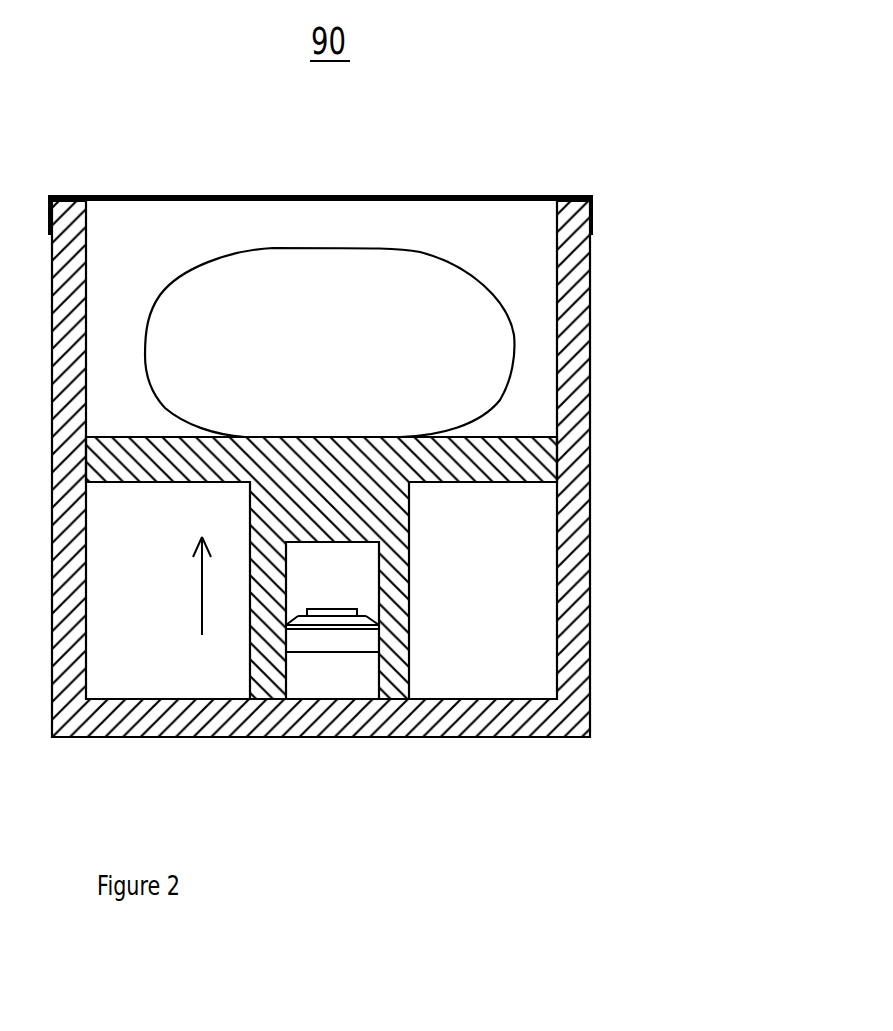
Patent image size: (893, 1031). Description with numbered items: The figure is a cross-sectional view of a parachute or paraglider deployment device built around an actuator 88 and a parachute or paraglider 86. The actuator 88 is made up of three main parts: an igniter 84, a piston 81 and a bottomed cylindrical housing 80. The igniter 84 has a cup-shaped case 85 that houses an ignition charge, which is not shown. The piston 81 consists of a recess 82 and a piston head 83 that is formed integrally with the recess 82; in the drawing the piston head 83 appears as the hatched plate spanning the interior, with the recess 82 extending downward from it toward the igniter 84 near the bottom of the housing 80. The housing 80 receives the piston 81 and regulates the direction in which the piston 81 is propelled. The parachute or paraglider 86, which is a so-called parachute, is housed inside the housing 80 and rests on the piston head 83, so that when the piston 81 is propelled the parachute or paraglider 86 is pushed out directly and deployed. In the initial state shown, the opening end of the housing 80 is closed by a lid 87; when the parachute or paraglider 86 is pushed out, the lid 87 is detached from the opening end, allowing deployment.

The bottomed cylindrical housing 80 is at (577, 302).
The lid 87 is at (477, 196).
The parachute or paraglider 86 is at (443, 320).
The piston 81 is at (432, 568).
The piston head 83 is at (515, 468).
The recess 82 is at (395, 575).
The cup-shaped case 85 is at (355, 643).
The igniter 84 is at (346, 677).
The actuator 88 is at (508, 633).